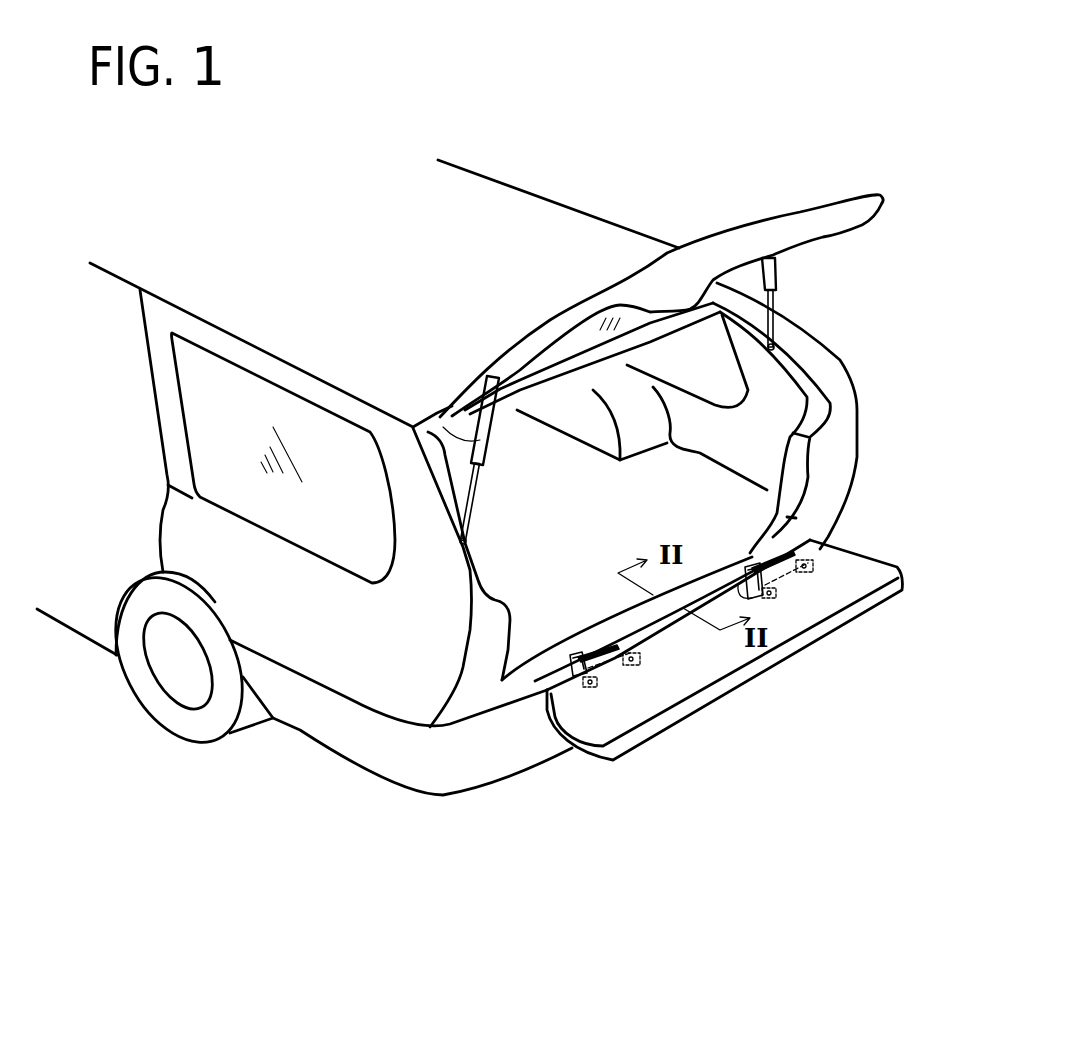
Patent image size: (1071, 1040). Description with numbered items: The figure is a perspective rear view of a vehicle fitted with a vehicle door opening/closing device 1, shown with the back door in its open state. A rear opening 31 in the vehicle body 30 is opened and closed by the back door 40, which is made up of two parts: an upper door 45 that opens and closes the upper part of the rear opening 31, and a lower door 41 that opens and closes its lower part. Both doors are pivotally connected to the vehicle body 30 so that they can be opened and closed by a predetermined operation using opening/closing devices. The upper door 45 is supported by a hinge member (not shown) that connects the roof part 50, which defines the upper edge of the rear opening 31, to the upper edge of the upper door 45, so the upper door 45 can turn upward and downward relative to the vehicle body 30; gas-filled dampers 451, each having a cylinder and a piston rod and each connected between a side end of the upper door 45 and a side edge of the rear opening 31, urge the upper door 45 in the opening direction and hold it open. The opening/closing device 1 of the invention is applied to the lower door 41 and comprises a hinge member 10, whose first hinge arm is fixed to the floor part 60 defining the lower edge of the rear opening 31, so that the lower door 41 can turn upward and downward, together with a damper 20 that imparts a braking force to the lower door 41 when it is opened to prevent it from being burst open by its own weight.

The vehicle door opening/closing device 1 is at (788, 580).
The hinge member 10 is at (574, 647).
The damper 20 is at (758, 598).
The vehicle body 30 is at (462, 168).
The rear opening 31 is at (793, 493).
The back door 40 is at (673, 461).
The lower door 41 is at (745, 700).
The upper door 45 is at (828, 205).
The damper 451 is at (438, 415).
The roof part 50 is at (551, 235).
The floor part 60 is at (518, 637).